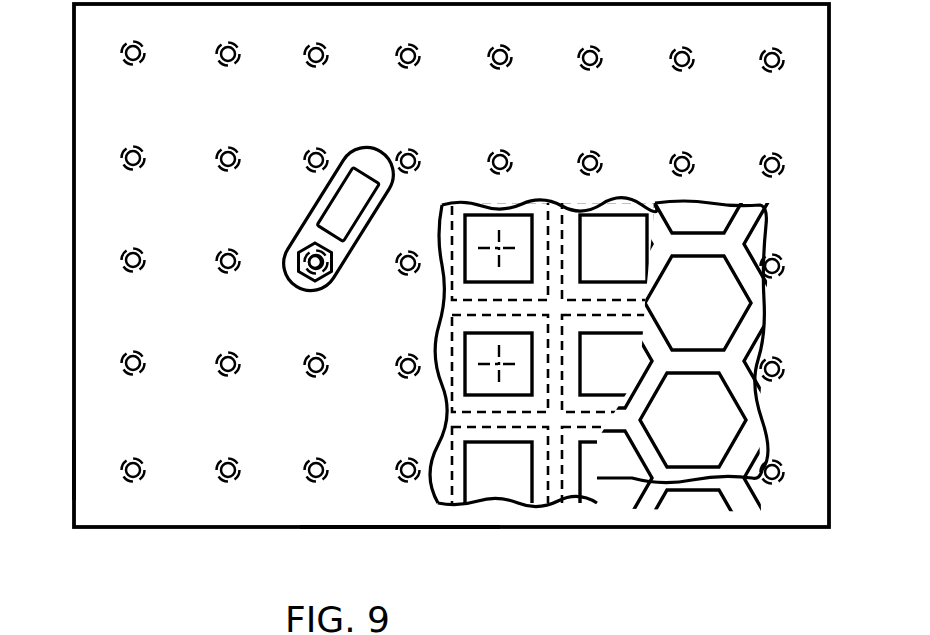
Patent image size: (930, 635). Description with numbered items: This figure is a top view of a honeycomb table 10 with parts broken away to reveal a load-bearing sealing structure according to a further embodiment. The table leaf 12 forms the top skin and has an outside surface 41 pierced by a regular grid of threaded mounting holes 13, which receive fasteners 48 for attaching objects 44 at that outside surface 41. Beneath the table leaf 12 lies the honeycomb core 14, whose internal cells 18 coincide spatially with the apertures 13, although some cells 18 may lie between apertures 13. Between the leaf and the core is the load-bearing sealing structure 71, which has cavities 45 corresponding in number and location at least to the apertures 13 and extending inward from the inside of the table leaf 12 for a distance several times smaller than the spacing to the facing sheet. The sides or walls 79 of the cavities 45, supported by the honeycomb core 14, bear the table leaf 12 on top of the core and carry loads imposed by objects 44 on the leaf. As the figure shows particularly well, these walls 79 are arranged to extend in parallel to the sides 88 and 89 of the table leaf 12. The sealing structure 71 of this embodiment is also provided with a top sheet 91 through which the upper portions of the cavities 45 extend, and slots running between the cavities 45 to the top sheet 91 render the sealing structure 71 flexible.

The honeycomb table 10 is at (66, 99).
The table leaf 12 is at (98, 200).
The mounting holes 13 is at (216, 464).
The honeycomb core 14 is at (733, 410).
The honeycomb cells 18 is at (678, 490).
The outside surface 41 is at (441, 196).
The object 44 is at (326, 207).
The cavities 45 is at (616, 222).
The fastener 48 is at (330, 280).
The load-bearing sealing structure 71 is at (514, 494).
The walls of the cavities 79 is at (592, 215).
The side of the table leaf 88 is at (388, 528).
The side of the table leaf 89 is at (74, 468).
The top sheet 91 is at (556, 428).